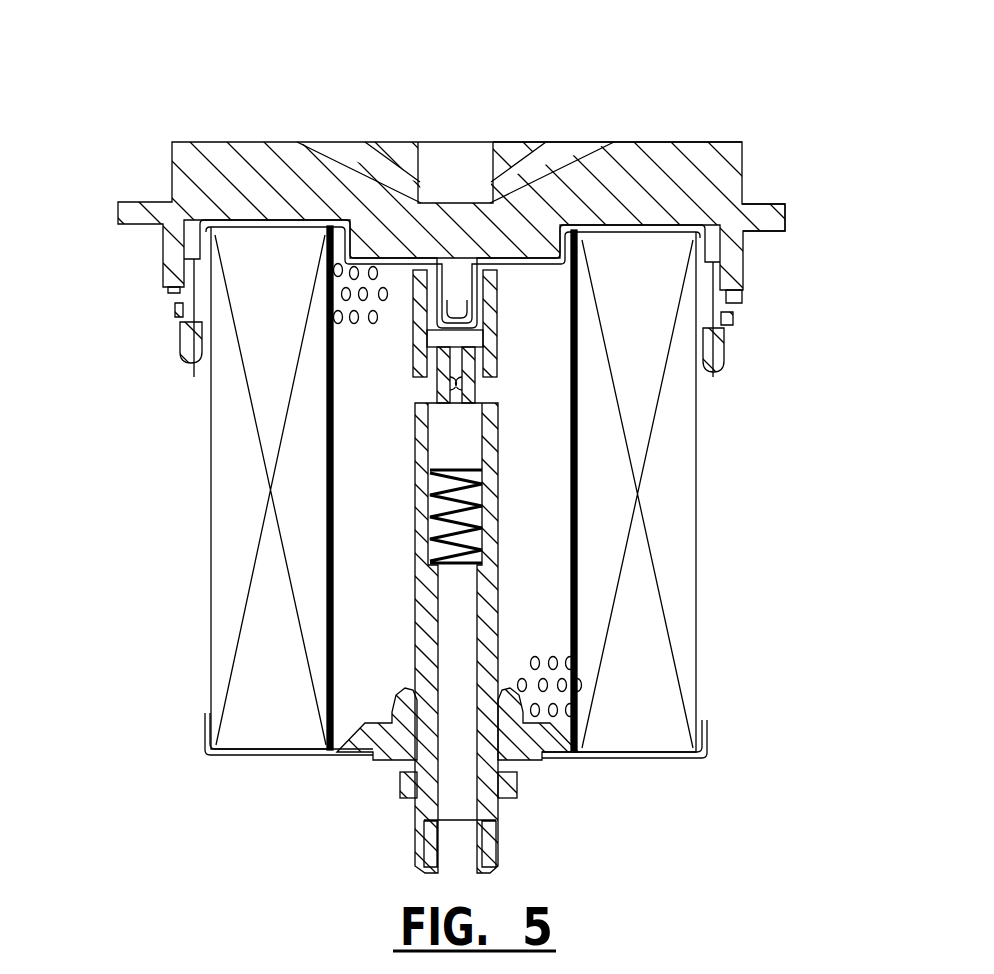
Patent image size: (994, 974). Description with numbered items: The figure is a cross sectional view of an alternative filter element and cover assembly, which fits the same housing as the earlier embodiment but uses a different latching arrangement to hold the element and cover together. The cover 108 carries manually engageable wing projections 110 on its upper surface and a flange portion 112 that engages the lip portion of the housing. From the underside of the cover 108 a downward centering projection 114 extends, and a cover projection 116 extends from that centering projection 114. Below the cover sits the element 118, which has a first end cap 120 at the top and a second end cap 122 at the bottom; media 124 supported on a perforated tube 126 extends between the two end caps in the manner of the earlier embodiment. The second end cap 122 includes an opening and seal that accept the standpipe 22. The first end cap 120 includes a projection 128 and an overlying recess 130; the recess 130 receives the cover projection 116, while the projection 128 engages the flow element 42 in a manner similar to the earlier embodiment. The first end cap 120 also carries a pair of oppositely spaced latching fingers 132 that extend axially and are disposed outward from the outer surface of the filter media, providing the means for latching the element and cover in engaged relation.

The cover 108 is at (721, 143).
The wing projections 110 is at (567, 143).
The flange portion 112 is at (776, 236).
The centering projection 114 is at (376, 242).
The cover projection 116 is at (456, 282).
The element 118 is at (698, 632).
The first end cap 120 is at (235, 230).
The second end cap 122 is at (277, 755).
The media 124 is at (646, 735).
The perforated tube 126 is at (577, 670).
The projection 128 is at (470, 325).
The recess 130 is at (463, 312).
The latching fingers 132 is at (720, 372).
The flow element 42 is at (453, 440).
The standpipe 22 is at (480, 524).